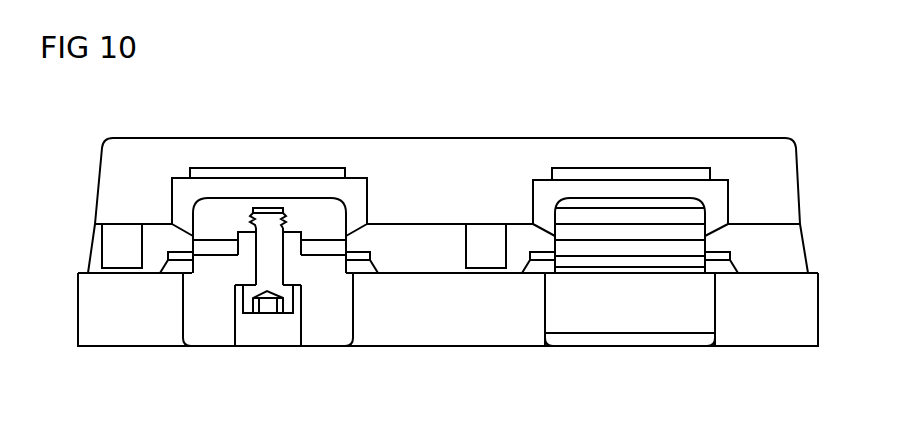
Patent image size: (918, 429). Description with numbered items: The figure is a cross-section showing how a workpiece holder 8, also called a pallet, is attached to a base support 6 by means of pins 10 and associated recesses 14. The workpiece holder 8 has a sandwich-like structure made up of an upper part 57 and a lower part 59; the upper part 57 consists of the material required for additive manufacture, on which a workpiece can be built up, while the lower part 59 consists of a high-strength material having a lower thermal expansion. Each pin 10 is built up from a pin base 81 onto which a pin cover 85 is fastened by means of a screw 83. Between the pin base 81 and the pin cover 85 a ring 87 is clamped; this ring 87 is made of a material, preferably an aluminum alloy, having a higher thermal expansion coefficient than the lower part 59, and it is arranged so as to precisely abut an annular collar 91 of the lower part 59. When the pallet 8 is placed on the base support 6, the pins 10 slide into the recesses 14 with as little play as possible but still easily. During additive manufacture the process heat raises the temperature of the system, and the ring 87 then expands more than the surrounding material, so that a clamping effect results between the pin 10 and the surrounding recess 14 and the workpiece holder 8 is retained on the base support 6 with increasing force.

The base support 6 is at (772, 330).
The workpiece holder 8 is at (63, 137).
The pin 10 is at (575, 320).
The positioning recess 14 is at (633, 190).
The upper part 57 is at (785, 184).
The lower part 59 is at (797, 248).
The pin base 81 is at (210, 322).
The screw 83 is at (263, 220).
The pin cover 85 is at (312, 215).
The ring 87 is at (322, 248).
The annular collar 91 is at (350, 223).